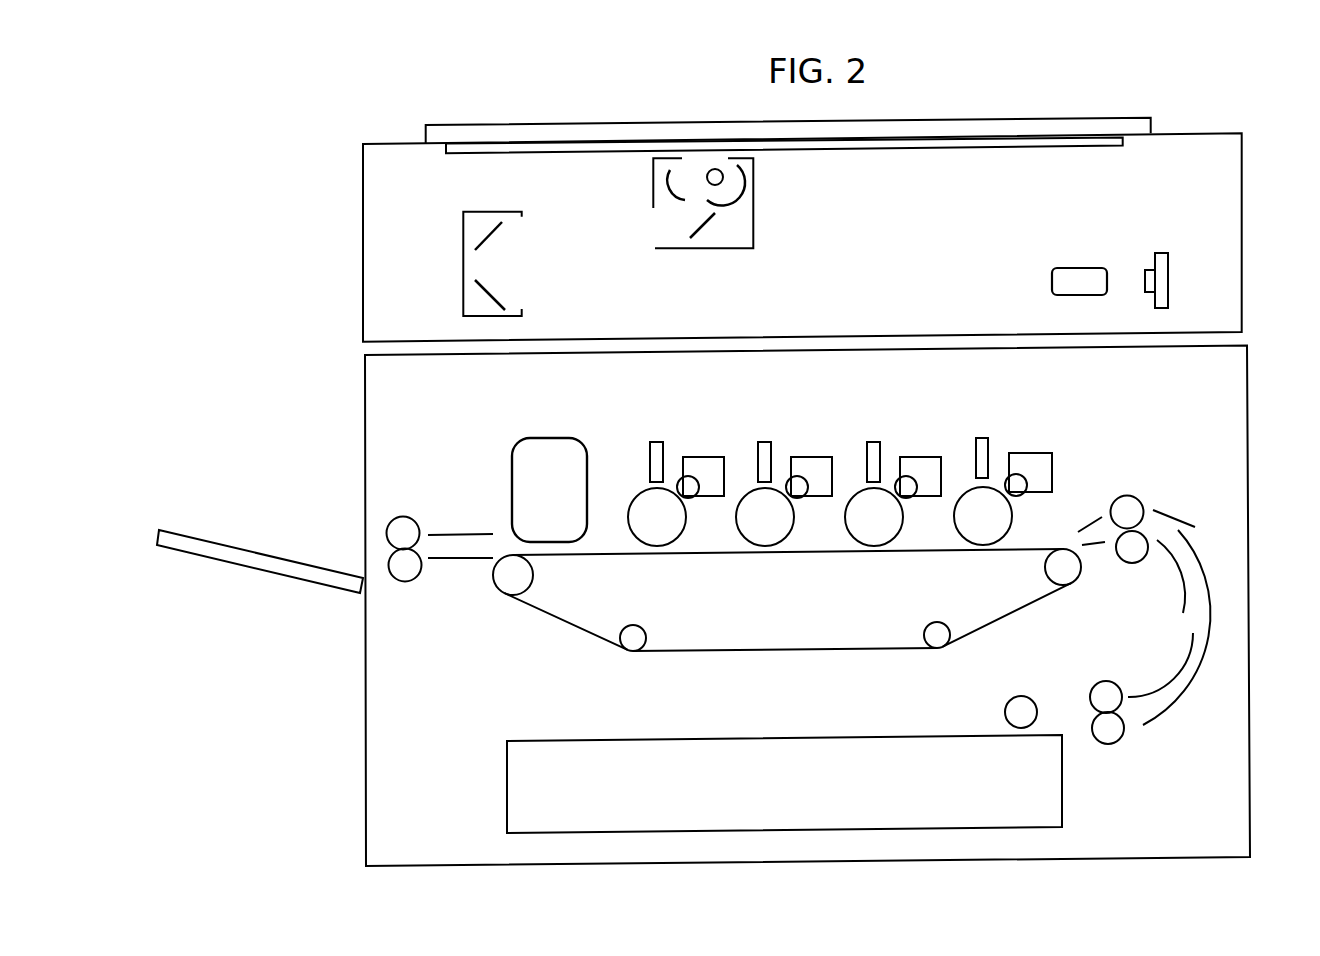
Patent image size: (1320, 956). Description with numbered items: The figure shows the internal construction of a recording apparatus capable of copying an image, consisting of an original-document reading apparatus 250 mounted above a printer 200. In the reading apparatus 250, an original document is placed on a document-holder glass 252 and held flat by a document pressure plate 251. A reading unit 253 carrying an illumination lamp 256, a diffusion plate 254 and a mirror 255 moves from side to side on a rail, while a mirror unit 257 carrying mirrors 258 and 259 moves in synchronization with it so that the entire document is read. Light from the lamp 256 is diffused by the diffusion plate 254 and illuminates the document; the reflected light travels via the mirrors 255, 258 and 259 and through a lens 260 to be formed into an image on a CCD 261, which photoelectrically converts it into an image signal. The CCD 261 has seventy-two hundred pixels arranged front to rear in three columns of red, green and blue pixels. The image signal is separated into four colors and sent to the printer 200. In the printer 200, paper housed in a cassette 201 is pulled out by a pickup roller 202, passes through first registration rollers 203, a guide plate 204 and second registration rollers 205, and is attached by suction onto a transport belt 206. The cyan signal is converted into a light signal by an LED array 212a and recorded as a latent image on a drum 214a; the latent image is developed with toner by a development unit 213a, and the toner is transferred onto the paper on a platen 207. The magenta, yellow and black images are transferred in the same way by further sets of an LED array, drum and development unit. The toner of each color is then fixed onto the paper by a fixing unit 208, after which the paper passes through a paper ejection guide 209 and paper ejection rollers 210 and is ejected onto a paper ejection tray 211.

The printer 200 is at (1249, 596).
The cassette 201 is at (690, 740).
The pickup roller 202 is at (1012, 700).
The first registration rollers 203 is at (1125, 732).
The guide plate 204 is at (1177, 672).
The second registration rollers 205 is at (1130, 497).
The transport belt 206 is at (1010, 618).
The platen 207 is at (832, 555).
The fixing unit 208 is at (560, 438).
The paper ejection guide 209 is at (453, 560).
The paper ejection rollers 210 is at (415, 516).
The paper ejection tray 211 is at (222, 544).
The LED array 212a is at (980, 436).
The development unit 213a is at (1043, 453).
The drum 214a is at (1013, 513).
The original-document reading apparatus 250 is at (1243, 256).
The document pressure plate 251 is at (1058, 117).
The document-holder glass 252 is at (943, 148).
The reading unit 253 is at (753, 222).
The diffusion plate 254 is at (652, 183).
The mirror 255 is at (700, 235).
The illumination lamp 256 is at (725, 180).
The mirror unit 257 is at (463, 257).
The mirror 258 is at (488, 232).
The mirror 259 is at (482, 291).
The lens 260 is at (1069, 268).
The CCD 261 is at (1160, 252).